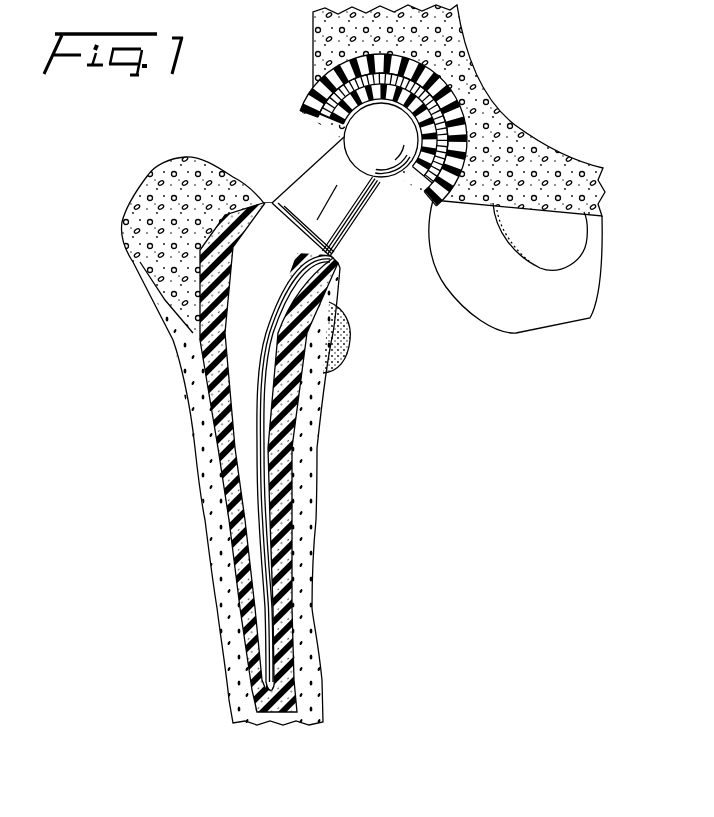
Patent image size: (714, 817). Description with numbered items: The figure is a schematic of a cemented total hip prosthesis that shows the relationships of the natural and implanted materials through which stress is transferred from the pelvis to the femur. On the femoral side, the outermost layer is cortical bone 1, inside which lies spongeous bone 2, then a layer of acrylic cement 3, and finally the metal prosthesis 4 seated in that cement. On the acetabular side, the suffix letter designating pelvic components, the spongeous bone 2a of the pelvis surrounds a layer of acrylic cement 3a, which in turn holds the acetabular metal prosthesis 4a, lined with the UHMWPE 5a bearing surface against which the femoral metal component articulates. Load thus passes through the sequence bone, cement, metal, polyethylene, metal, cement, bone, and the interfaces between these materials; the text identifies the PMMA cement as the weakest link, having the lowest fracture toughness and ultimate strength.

The cortical bone 1 is at (225, 630).
The spongeous bone 2 is at (168, 200).
The spongeous bone 2a is at (312, 42).
The acrylic cement 3 is at (287, 420).
The acrylic cement 3a is at (482, 132).
The metal prosthesis 4 is at (277, 270).
The metal prosthesis 4a is at (330, 102).
The UHMWPE 5a is at (348, 112).